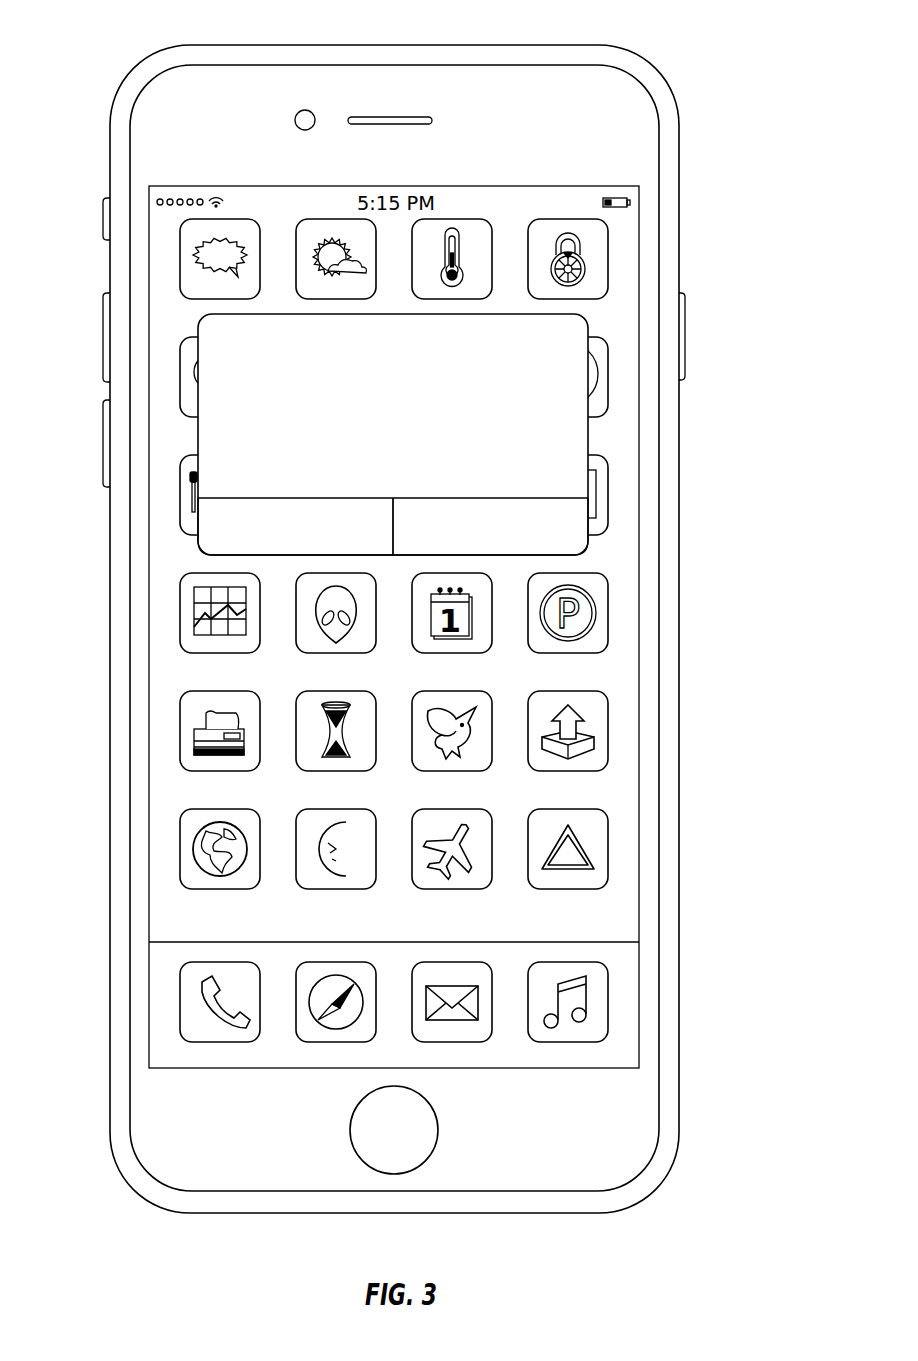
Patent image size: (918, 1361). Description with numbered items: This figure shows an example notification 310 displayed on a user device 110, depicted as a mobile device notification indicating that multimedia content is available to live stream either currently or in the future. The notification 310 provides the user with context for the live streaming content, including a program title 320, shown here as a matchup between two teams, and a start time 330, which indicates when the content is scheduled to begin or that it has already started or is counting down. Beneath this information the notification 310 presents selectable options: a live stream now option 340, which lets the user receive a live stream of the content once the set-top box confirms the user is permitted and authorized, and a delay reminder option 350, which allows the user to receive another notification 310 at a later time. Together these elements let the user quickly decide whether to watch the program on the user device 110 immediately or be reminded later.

The user device 110 is at (667, 57).
The notification 310 is at (392, 433).
The program title 320 is at (253, 360).
The start time 330 is at (486, 437).
The live stream now button 340 is at (195, 553).
The remind me later button 350 is at (593, 553).